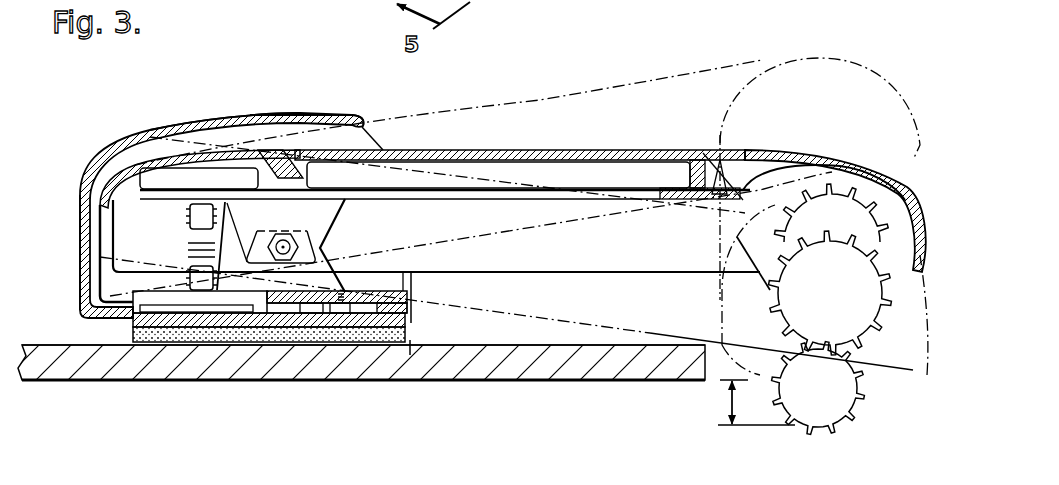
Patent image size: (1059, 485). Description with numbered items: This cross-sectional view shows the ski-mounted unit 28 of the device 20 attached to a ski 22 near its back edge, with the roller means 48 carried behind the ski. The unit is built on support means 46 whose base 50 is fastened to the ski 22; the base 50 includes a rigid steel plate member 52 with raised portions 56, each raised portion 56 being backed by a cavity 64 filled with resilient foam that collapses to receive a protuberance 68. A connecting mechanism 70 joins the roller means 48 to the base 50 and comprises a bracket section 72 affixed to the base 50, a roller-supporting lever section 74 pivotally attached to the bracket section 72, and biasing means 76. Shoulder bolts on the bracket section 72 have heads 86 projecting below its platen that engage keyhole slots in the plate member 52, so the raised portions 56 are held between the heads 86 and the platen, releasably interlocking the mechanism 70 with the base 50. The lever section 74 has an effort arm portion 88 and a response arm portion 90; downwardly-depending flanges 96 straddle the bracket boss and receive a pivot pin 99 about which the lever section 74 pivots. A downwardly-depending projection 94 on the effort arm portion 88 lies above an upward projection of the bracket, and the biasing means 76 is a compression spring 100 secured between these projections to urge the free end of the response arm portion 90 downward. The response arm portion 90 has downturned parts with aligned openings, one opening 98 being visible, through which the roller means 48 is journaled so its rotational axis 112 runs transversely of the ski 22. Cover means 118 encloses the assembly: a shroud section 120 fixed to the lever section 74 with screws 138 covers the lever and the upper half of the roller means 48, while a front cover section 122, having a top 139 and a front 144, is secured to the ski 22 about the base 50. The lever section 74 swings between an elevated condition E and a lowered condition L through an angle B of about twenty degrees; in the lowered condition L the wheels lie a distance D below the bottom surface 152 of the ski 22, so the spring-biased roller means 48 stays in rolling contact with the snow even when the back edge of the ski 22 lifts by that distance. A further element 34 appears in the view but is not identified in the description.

The device 20 is at (436, 105).
The ski 22 is at (490, 344).
The ski-mounted unit 28 is at (340, 106).
The workpiece surface 34 is at (552, 344).
The support means 46 is at (566, 150).
The roller means 48 is at (567, 8).
The base 50 is at (414, 327).
The rigid plate member 52 is at (410, 299).
The raised portion 56 is at (253, 341).
The cavity 64 is at (290, 341).
The protuberance 68 is at (363, 341).
The connecting mechanism 70 is at (568, 212).
The bracket section 72 is at (412, 290).
The lever section 74 is at (493, 200).
The biasing means 76 is at (183, 238).
The bolt head 86 is at (333, 341).
The effort arm portion 88 is at (168, 191).
The response arm portion 90 is at (626, 192).
The downwardly-depending projection 94 is at (728, 245).
The downwardly-depending flange 96 is at (356, 224).
The opening 98 is at (190, 213).
The pivot pin 99 is at (270, 247).
The compression spring 100 is at (225, 206).
The rotational axis 112 is at (836, 160).
The cover means 118 is at (141, 124).
The shroud section 120 is at (646, 150).
The front cover section 122 is at (216, 117).
The screw 138 is at (341, 201).
The top 139 is at (285, 112).
The front 144 is at (80, 252).
The bottom surface 152 is at (535, 380).
The angle B is at (338, 242).
The distance D is at (723, 400).
The elevated condition E is at (912, 100).
The lowered condition L is at (834, 298).